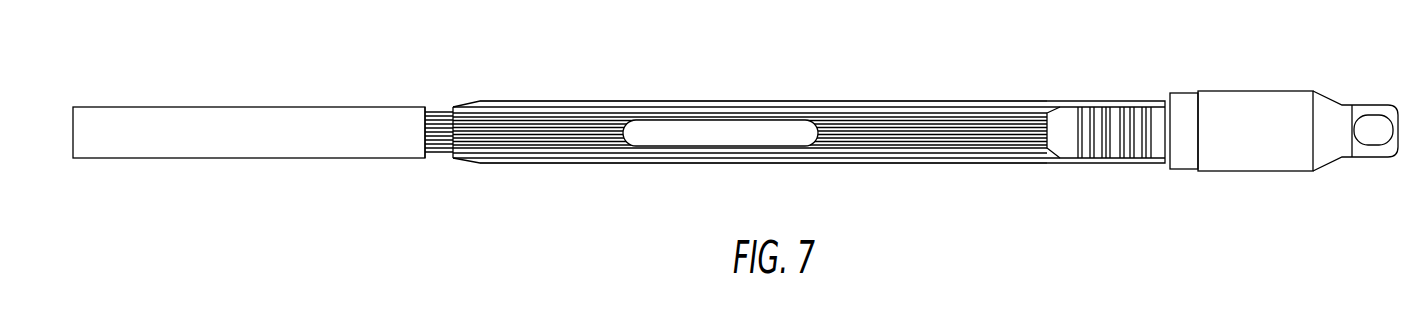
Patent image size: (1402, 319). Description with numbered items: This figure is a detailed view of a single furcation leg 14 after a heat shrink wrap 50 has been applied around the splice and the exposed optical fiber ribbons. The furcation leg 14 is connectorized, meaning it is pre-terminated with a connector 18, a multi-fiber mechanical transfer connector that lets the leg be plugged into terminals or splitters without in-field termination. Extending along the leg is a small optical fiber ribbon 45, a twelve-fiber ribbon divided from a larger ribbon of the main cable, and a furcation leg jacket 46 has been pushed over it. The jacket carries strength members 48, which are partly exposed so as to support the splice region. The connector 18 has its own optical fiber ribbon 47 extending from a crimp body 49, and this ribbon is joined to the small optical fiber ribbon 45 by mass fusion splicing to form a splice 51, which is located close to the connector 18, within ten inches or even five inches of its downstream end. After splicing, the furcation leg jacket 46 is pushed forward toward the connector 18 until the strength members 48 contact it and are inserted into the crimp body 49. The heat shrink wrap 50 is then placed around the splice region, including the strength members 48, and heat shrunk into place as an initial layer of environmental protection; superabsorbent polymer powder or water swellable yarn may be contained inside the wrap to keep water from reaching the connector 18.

The furcation leg 14 is at (325, 104).
The connector 18 is at (1258, 140).
The small optical fiber ribbon 45 is at (809, 131).
The furcation leg jacket 46 is at (313, 152).
The optical fiber ribbon 47 is at (935, 135).
The strength members 48 is at (745, 110).
The crimp body 49 is at (1133, 138).
The heat shrink wrap 50 is at (1025, 100).
The splice 51 is at (665, 137).